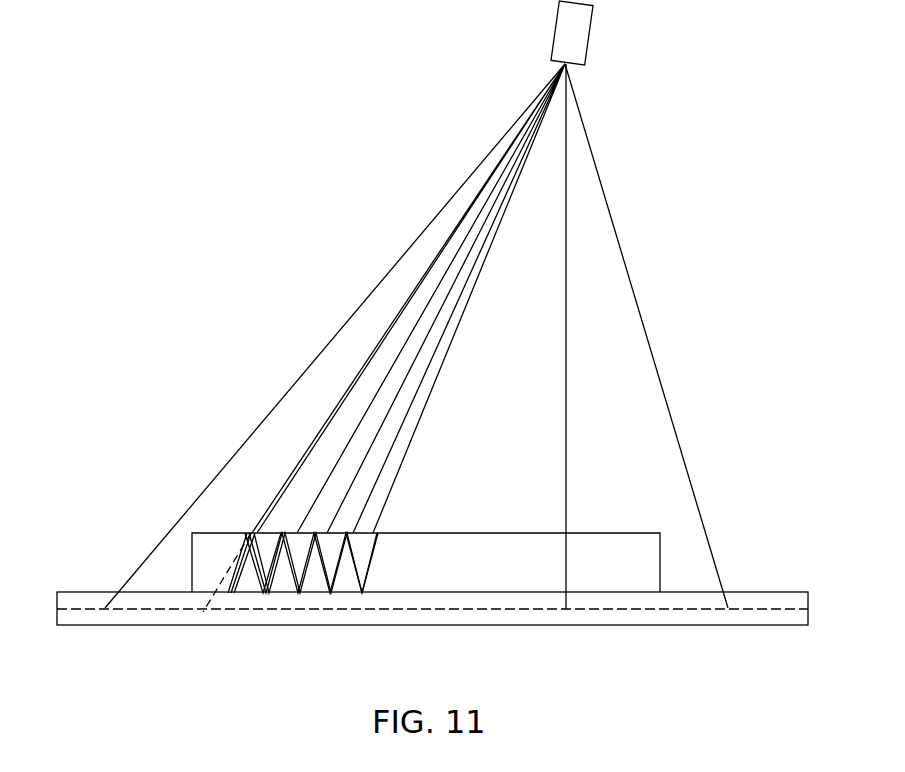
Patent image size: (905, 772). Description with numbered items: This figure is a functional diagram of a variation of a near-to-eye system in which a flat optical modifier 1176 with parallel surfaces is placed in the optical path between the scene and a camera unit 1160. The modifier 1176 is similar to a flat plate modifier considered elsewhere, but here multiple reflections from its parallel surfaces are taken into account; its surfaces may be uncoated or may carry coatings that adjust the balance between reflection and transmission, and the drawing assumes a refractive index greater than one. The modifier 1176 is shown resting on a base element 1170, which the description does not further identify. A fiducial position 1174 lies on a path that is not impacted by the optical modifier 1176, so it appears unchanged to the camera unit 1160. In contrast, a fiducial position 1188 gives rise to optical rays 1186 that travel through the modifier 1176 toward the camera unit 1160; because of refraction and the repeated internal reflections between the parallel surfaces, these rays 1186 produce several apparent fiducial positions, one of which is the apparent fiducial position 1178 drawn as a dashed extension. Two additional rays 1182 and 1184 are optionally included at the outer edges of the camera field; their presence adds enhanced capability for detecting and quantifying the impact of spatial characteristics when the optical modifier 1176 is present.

The camera unit 1160 is at (553, 31).
The substrate plate 1170 is at (72, 627).
The fiducial position 1174 is at (567, 610).
The optical modifier 1176 is at (607, 553).
The apparent fiducial position 1178 is at (197, 620).
The ray 1182 is at (631, 285).
The ray 1184 is at (285, 393).
The optical rays 1186 is at (457, 253).
The fiducial position 1188 is at (228, 595).